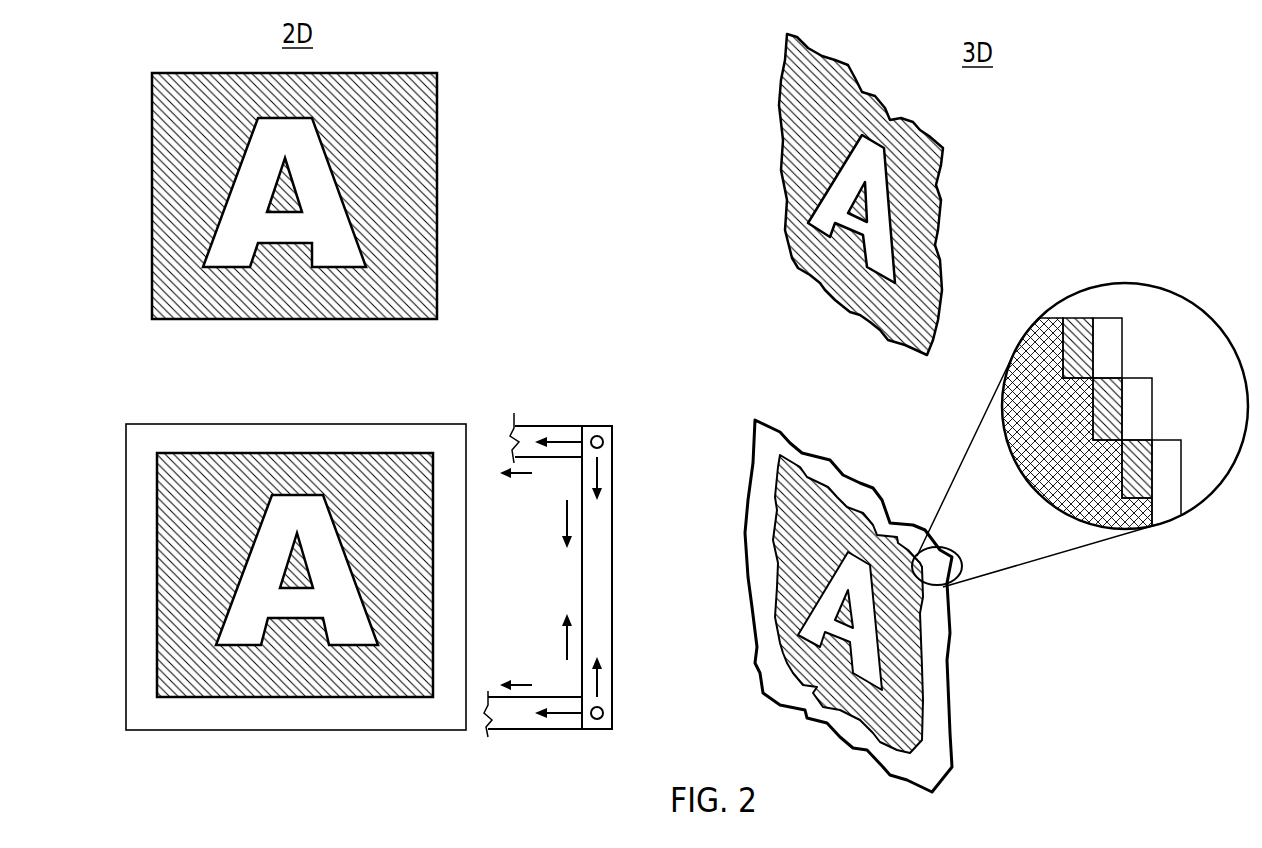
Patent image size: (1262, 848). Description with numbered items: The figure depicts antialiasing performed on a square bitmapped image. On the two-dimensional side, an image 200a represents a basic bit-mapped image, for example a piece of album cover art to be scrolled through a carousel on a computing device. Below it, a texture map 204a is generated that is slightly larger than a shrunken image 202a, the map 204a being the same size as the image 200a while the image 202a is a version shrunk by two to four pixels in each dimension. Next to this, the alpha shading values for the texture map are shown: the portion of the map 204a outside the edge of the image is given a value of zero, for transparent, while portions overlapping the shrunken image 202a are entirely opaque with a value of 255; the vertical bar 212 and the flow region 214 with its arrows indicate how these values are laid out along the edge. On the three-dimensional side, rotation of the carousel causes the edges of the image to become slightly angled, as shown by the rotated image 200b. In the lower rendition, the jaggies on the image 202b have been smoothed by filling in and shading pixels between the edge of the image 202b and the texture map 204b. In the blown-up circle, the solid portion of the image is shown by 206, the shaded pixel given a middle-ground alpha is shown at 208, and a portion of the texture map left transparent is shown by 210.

The image 200a is at (408, 148).
The shrunken image 202a is at (383, 470).
The texture map 204a is at (295, 432).
The vertical flow bar 212 is at (605, 557).
The flow region 214 is at (552, 588).
The alpha shading value 255 is at (537, 579).
The rotated image 200b is at (927, 197).
The image 202b is at (903, 627).
The texture map 204b is at (935, 690).
The solid portion of the image 206 is at (1033, 360).
The shaded pixel 208 is at (1075, 327).
The transparent portion of the texture map 210 is at (1113, 327).